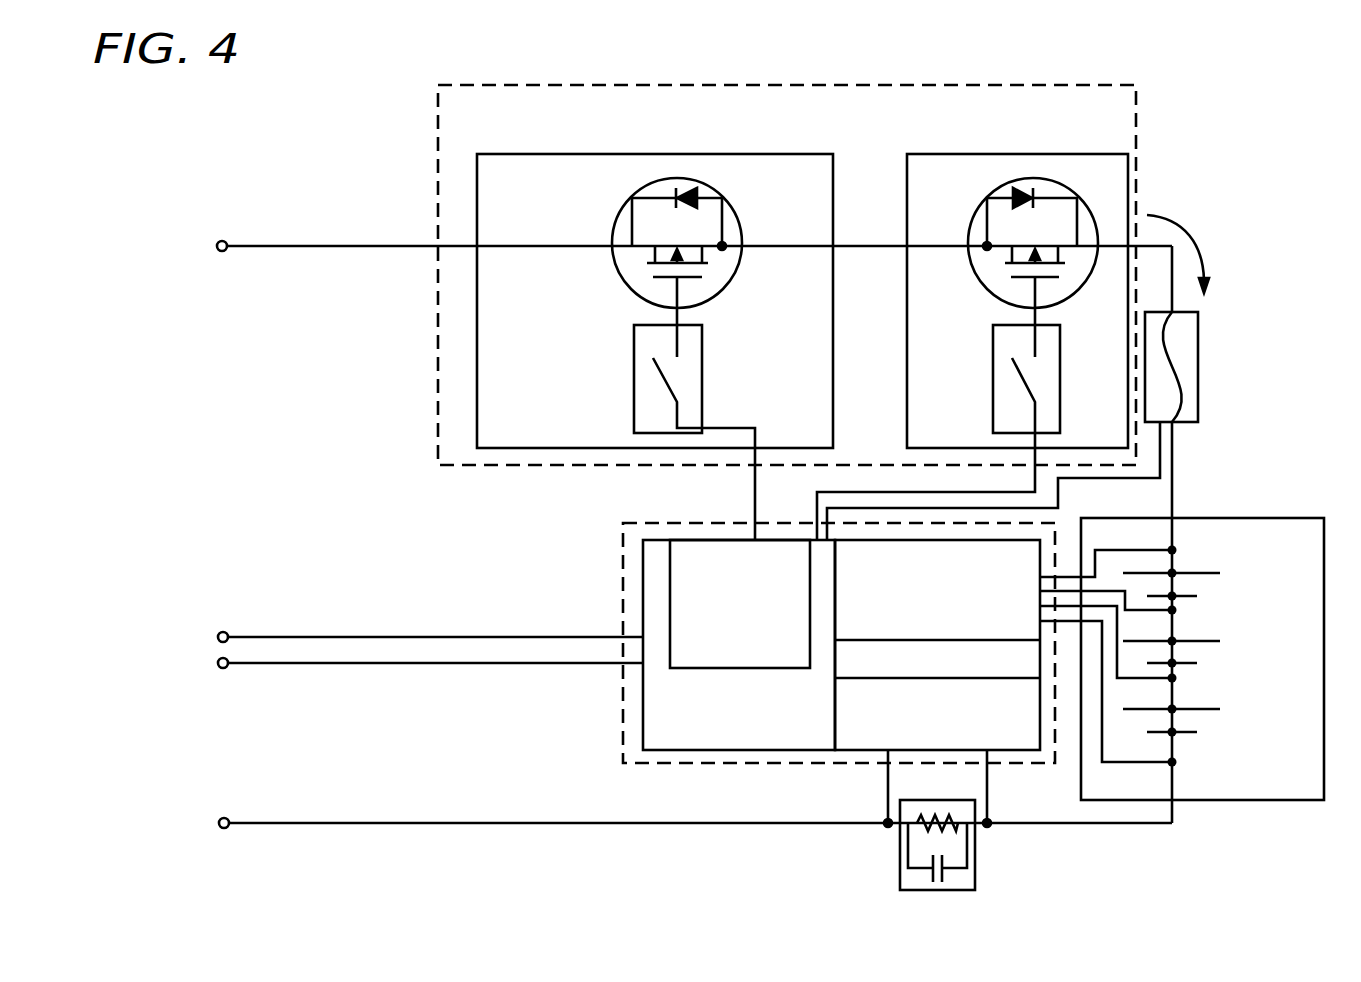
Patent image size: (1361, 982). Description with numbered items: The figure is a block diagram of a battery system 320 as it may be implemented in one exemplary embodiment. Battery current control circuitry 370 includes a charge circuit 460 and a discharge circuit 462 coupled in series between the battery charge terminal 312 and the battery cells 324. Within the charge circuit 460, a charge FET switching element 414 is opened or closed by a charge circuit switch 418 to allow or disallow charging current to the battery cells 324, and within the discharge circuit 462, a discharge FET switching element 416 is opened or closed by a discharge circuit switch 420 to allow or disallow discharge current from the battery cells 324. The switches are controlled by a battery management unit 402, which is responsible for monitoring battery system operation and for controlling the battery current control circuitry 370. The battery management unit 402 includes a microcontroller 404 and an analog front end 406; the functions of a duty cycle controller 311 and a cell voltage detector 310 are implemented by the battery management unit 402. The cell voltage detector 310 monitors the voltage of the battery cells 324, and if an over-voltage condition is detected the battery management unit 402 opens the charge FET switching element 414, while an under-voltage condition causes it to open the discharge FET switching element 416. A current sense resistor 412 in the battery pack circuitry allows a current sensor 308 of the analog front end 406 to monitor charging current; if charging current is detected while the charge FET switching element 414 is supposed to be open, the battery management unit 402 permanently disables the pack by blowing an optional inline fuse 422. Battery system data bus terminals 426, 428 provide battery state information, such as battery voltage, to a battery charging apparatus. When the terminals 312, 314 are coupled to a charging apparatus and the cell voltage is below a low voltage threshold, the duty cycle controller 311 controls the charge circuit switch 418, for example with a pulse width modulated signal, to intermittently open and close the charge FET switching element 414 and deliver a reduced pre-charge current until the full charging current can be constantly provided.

The current sensor 308 is at (1008, 743).
The cell voltage detector 310 is at (1017, 619).
The duty cycle controller 311 is at (760, 663).
The battery charge terminal 312 is at (220, 253).
The battery terminal 314 is at (223, 828).
The battery system 320 is at (1188, 152).
The battery cells 324 is at (1257, 800).
The battery current control circuitry 370 is at (438, 142).
The battery management unit 402 is at (622, 610).
The microcontroller 404 is at (695, 750).
The analog front end 406 is at (863, 750).
The current sense resistor 412 is at (898, 853).
The charge FET switching element 414 is at (732, 202).
The discharge FET switching element 416 is at (988, 198).
The charge circuit switch 418 is at (634, 367).
The discharge circuit switch 420 is at (993, 368).
The inline fuse 422 is at (1198, 377).
The battery system data bus terminal 426 is at (222, 633).
The battery system data bus terminal 428 is at (223, 668).
The charge circuit 460 is at (688, 154).
The discharge circuit 462 is at (1023, 154).